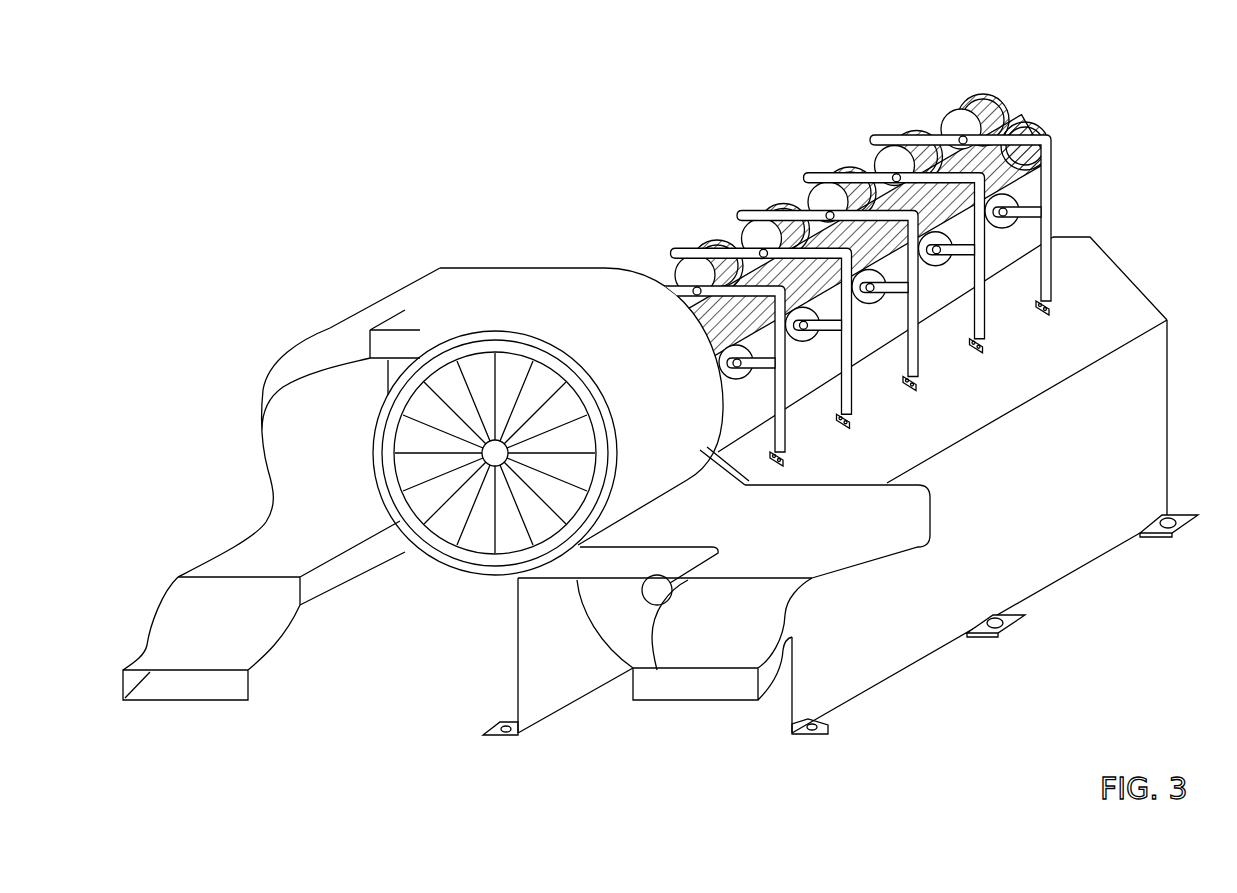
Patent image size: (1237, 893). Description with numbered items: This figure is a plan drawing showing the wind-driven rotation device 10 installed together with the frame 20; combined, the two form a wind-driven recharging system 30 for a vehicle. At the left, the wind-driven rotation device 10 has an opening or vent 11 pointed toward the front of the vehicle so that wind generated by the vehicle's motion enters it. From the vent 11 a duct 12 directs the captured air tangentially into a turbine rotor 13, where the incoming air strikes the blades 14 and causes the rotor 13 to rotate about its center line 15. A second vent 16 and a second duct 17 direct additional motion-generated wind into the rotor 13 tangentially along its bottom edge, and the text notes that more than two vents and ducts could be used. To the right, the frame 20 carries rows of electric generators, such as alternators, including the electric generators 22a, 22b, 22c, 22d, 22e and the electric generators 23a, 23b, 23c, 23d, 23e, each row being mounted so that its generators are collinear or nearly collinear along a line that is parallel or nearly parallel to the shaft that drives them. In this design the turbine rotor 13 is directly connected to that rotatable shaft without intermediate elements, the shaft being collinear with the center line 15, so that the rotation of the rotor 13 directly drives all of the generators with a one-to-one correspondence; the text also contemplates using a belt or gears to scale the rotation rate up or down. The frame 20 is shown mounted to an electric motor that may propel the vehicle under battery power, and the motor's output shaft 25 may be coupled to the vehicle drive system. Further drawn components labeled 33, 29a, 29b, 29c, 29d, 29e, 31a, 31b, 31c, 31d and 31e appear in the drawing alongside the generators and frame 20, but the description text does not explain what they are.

The wind-driven recharging system 30 is at (466, 96).
The wind-driven rotation device 10 is at (266, 298).
The frame 20 is at (1094, 113).
The vent 11 is at (192, 685).
The duct 12 is at (373, 305).
The turbine rotor 13 is at (482, 558).
The blades 14 is at (457, 523).
The center line 15 is at (490, 448).
The second vent 16 is at (703, 688).
The second duct 17 is at (827, 497).
The output shaft 25 is at (650, 592).
The shaft 33 is at (1022, 157).
The electric generator 22a is at (695, 255).
The electric generator 22b is at (762, 218).
The electric generator 22c is at (828, 182).
The electric generator 22d is at (894, 146).
The electric generator 22e is at (961, 109).
The spool rim 29a is at (717, 250).
The spool rim 29b is at (784, 214).
The spool rim 29c is at (850, 177).
The spool rim 29d is at (916, 140).
The spool rim 29e is at (983, 104).
The electric generator 23a is at (760, 342).
The electric generator 23b is at (826, 304).
The electric generator 23c is at (893, 265).
The electric generator 23d is at (965, 226).
The electric generator 23e is at (1026, 188).
The hanger bracket 31a is at (768, 378).
The hanger bracket 31b is at (834, 340).
The hanger bracket 31c is at (901, 301).
The hanger bracket 31d is at (968, 262).
The hanger bracket 31e is at (1034, 224).